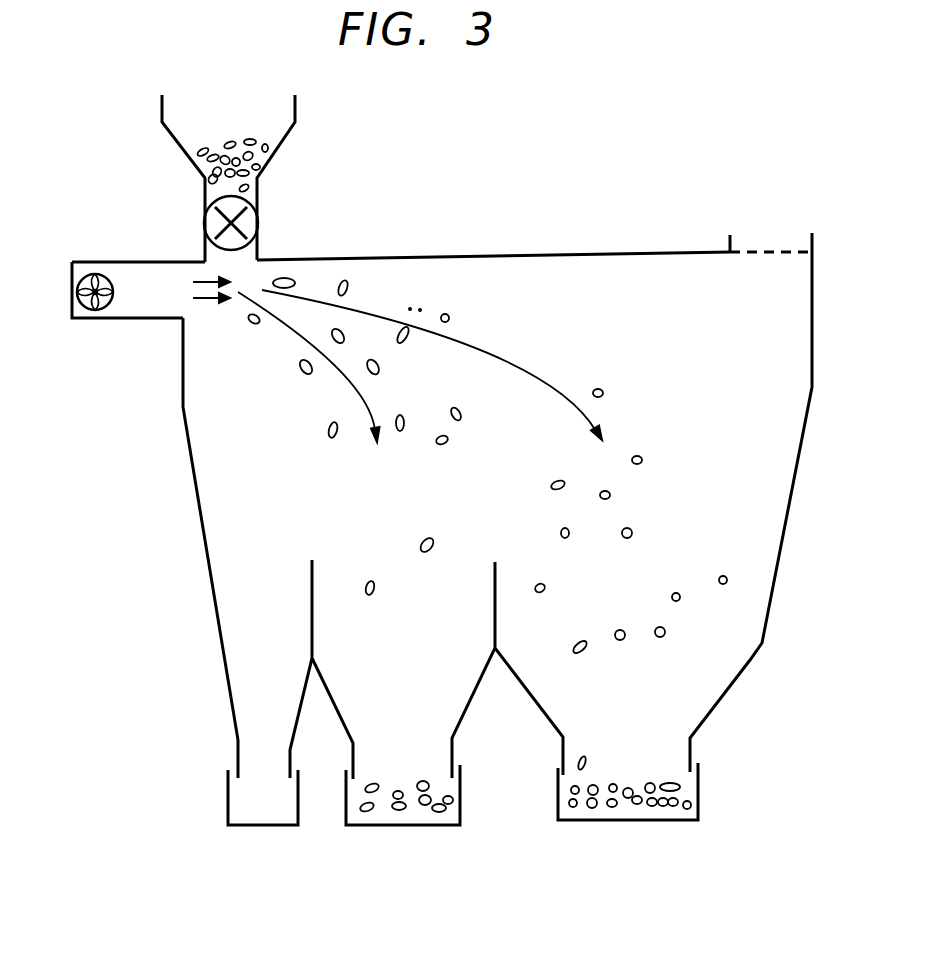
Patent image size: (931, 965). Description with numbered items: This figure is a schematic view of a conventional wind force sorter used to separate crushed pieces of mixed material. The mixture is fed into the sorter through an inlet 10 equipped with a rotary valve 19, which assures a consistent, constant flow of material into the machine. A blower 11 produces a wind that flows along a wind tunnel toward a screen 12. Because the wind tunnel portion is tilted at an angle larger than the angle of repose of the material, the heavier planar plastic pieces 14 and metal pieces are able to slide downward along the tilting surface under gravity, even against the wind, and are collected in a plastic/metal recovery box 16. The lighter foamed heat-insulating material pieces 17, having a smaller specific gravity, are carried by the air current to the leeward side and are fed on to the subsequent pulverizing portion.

The inlet 10 is at (288, 133).
The blower 11 is at (95, 275).
The screen 12 is at (758, 252).
The plastic pieces 14 is at (424, 538).
The plastic/metal recovery box 16 is at (400, 825).
The foamed heat-insulating material pieces 17 is at (628, 527).
The rotary valve 19 is at (258, 228).